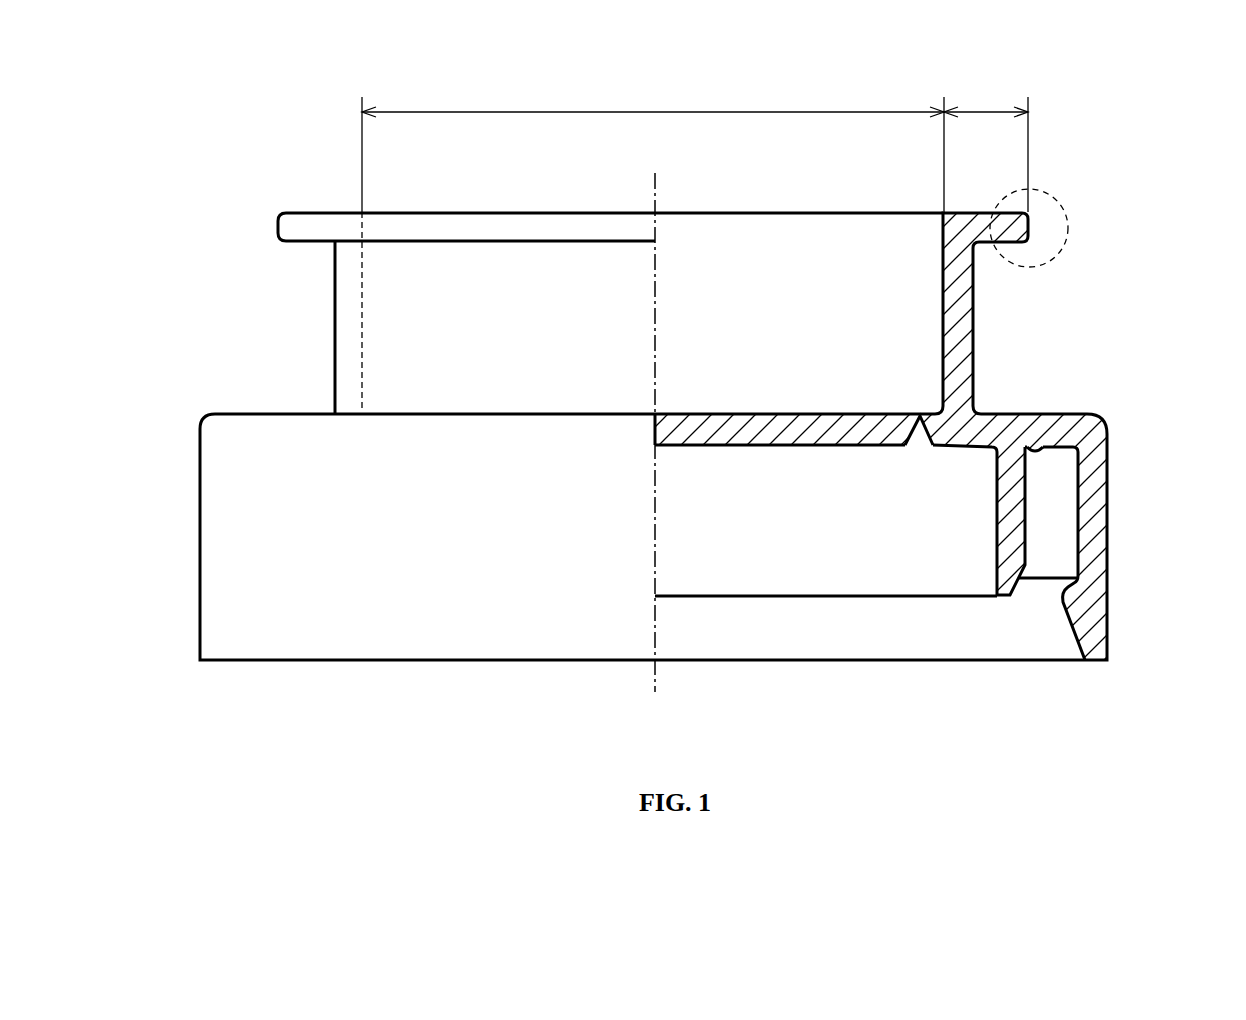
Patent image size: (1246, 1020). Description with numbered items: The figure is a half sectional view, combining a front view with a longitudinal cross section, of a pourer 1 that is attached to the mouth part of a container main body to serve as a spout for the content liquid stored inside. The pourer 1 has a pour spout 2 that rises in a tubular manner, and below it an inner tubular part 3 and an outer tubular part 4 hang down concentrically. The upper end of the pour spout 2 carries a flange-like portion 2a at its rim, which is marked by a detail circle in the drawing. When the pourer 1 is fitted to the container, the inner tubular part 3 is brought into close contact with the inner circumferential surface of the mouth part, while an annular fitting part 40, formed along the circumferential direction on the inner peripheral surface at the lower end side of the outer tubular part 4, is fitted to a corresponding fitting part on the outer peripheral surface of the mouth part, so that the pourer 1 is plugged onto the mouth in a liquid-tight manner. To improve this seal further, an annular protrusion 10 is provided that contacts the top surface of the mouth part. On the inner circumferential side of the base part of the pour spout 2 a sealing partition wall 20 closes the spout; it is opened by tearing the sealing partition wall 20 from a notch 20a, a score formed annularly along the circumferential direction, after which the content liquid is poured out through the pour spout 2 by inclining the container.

The pourer 1 is at (1061, 133).
The pour spout 2 is at (975, 330).
The flange 2a is at (977, 213).
The inner tubular part 3 is at (975, 572).
The outer tubular part 4 is at (1107, 525).
The annular protrusion 10 is at (1038, 450).
The sealing partition wall 20 is at (773, 446).
The notch 20a is at (920, 446).
The annular fitting part 40 is at (1085, 617).